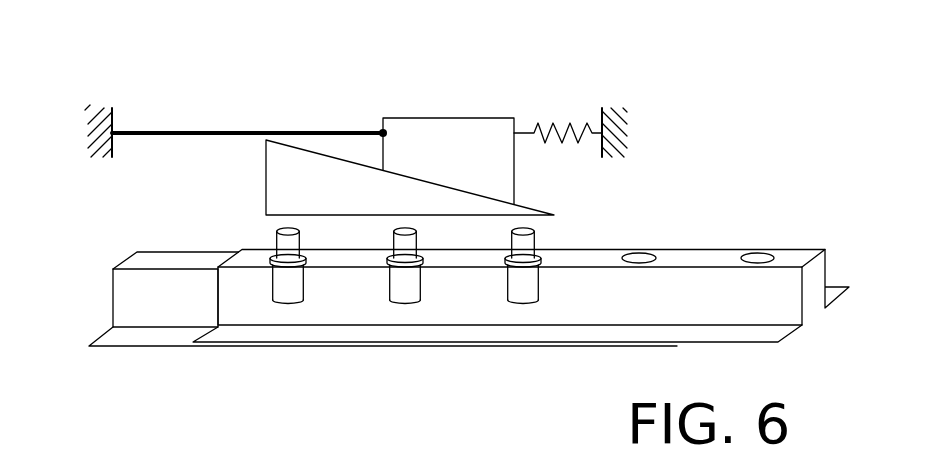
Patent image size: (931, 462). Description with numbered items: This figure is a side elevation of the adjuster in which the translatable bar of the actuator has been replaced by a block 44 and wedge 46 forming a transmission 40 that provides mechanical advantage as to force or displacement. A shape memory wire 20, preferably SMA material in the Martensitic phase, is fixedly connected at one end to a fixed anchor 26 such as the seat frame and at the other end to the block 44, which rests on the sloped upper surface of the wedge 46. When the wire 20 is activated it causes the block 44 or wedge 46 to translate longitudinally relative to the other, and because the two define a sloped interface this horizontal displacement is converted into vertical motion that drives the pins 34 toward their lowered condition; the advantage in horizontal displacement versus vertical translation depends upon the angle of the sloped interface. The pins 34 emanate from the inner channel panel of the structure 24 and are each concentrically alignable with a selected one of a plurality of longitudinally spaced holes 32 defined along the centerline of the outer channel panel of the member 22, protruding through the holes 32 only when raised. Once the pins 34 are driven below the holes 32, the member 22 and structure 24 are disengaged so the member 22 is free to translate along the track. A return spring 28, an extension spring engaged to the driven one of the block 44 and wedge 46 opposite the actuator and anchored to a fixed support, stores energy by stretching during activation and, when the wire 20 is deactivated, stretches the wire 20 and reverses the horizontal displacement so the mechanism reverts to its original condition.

The shape memory wire 20 is at (281, 131).
The member 22 is at (368, 300).
The structure 24 is at (190, 316).
The fixed anchor 26 is at (101, 108).
The return spring 28 is at (553, 122).
The holes 32 is at (653, 252).
The pins 34 is at (525, 304).
The transmission 40 is at (431, 97).
The block 44 is at (514, 180).
The wedge 46 is at (266, 182).